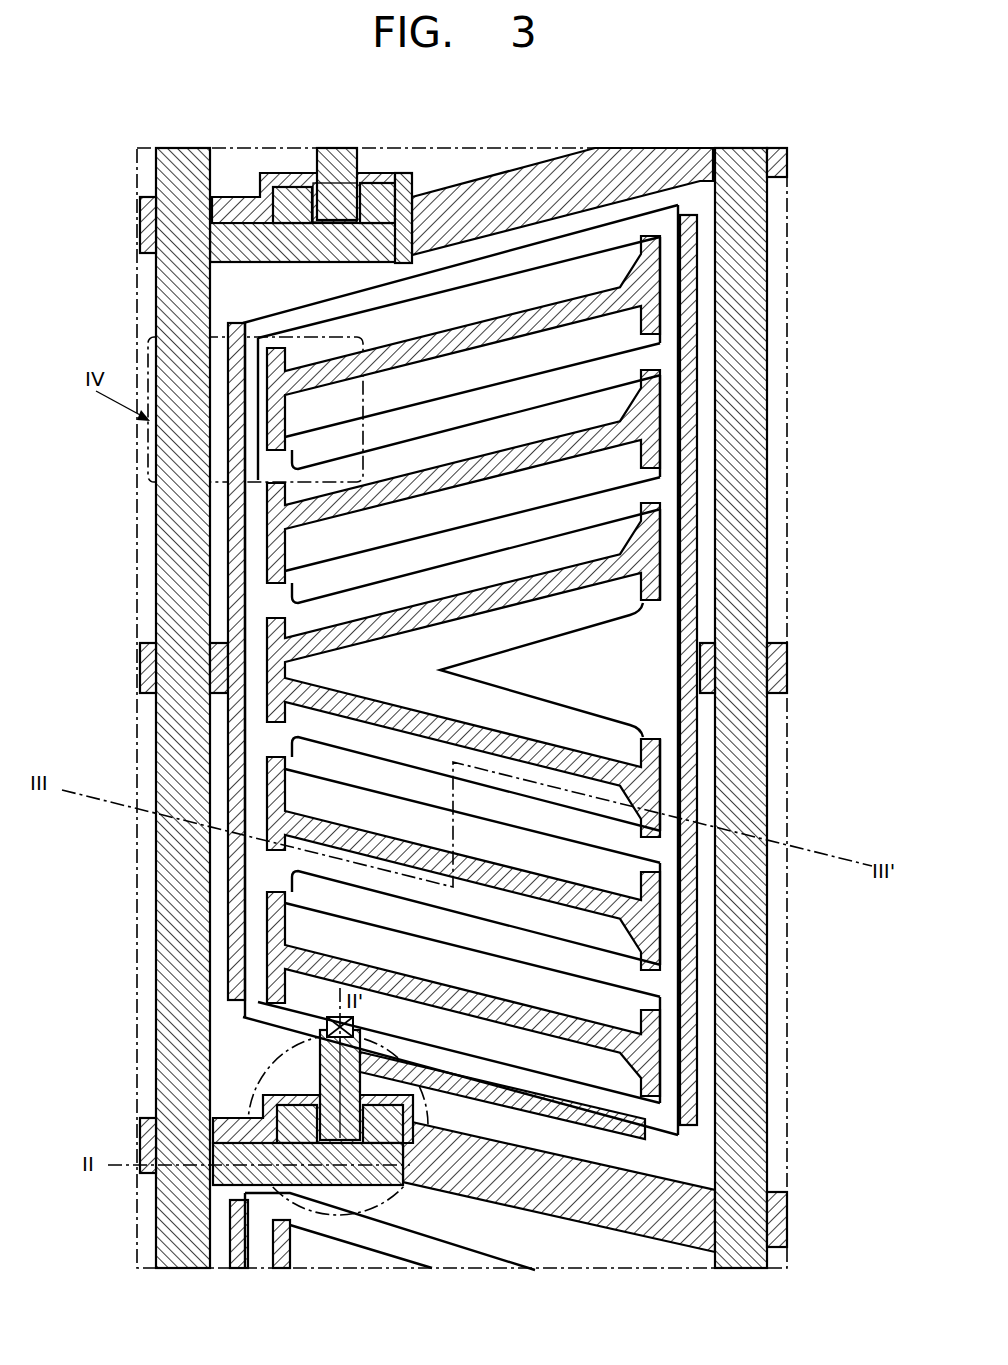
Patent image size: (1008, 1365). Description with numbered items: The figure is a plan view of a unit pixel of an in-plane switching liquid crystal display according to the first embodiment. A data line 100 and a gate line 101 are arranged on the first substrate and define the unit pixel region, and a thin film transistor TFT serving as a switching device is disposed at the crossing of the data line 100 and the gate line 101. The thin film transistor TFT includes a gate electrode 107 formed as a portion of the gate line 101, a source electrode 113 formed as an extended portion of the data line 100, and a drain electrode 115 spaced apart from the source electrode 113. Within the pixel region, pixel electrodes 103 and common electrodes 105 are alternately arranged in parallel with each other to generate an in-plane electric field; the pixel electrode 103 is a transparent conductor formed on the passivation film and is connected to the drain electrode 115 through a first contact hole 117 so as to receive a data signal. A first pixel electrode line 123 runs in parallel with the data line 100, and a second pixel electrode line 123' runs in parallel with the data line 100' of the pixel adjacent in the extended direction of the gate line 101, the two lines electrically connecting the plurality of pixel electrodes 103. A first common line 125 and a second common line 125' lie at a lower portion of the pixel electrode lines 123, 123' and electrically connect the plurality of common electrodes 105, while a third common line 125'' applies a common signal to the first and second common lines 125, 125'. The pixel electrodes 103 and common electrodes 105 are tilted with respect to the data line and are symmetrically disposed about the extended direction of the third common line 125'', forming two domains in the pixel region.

The data line 100 is at (138, 708).
The data line of the adjacent pixel 100' is at (793, 708).
The gate line 101 is at (787, 1223).
The pixel electrode 103 is at (563, 378).
The common electrode 105 is at (643, 402).
The gate electrode 107 is at (296, 1105).
The source electrode 113 is at (387, 1127).
The drain electrode 115 is at (343, 1100).
The first contact hole 117 is at (325, 1028).
The first pixel electrode line 123 is at (159, 795).
The second pixel electrode line 123' is at (776, 670).
The first common line 125 is at (151, 706).
The second common line 125' is at (786, 798).
The third common line 125'' is at (821, 668).
The thin film transistor TFT is at (255, 1081).